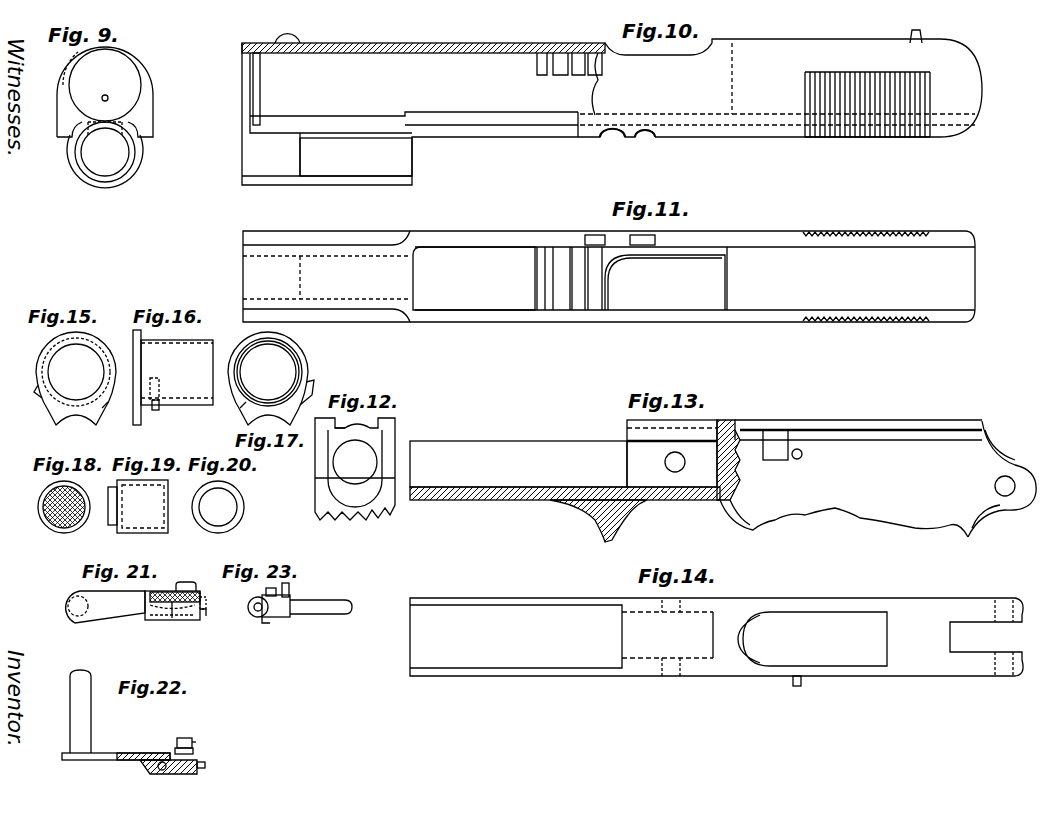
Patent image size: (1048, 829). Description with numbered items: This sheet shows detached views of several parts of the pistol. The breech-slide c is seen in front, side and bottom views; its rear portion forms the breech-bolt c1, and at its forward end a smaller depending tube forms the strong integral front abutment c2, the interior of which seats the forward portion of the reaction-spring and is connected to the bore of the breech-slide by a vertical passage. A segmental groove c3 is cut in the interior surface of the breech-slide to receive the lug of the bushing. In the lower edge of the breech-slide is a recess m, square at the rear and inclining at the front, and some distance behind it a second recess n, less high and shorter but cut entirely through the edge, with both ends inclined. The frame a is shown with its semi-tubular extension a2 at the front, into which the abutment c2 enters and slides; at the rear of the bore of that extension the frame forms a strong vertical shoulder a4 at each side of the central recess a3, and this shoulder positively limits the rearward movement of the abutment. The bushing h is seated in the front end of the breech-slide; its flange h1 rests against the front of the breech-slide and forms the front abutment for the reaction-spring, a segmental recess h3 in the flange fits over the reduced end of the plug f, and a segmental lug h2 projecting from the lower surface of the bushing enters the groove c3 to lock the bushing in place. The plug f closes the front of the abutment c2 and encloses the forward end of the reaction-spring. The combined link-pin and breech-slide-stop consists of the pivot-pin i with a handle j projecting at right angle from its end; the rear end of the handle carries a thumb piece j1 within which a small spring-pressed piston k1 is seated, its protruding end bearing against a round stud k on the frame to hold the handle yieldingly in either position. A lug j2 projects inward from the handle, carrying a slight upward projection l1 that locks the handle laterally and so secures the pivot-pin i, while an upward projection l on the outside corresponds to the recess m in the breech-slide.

In FIG. 9, the breech-slide c is at (111, 117).
In FIG. 10, the breech-slide c is at (612, 102).
In FIG. 11, the breech-slide c is at (609, 286).
In FIG. 9, the breech-bolt c1 is at (102, 85).
In FIG. 10, the breech-bolt c1 is at (855, 88).
In FIG. 11, the breech-bolt c1 is at (851, 278).
In FIG. 9, the front abutment c2 is at (105, 152).
In FIG. 10, the front abutment c2 is at (356, 157).
In FIG. 11, the front abutment c2 is at (326, 277).
In FIG. 9, the segmental groove c3 is at (102, 100).
In FIG. 10, the segmental groove c3 is at (260, 100).
In FIG. 10, the recess m is at (608, 141).
In FIG. 11, the recess m is at (595, 231).
In FIG. 10, the second recess n is at (645, 141).
In FIG. 11, the second recess n is at (642, 231).
In FIG. 15, the bushing h is at (76, 369).
In FIG. 16, the bushing h is at (177, 372).
In FIG. 17, the bushing h is at (268, 369).
In FIG. 15, the flange h1 is at (104, 410).
In FIG. 16, the flange h1 is at (133, 407).
In FIG. 17, the flange h1 is at (242, 408).
In FIG. 15, the segmental lug h2 is at (36, 386).
In FIG. 16, the segmental lug h2 is at (159, 408).
In FIG. 17, the segmental lug h2 is at (312, 382).
In FIG. 15, the segmental recess h3 is at (76, 403).
In FIG. 17, the segmental recess h3 is at (268, 403).
In FIG. 18, the plug f is at (64, 507).
In FIG. 19, the plug f is at (138, 506).
In FIG. 20, the plug f is at (218, 507).
In FIG. 12, the frame a is at (355, 469).
In FIG. 13, the frame a is at (723, 470).
In FIG. 14, the frame a is at (716, 633).
In FIG. 12, the semi-tubular extension a2 is at (355, 479).
In FIG. 13, the semi-tubular extension a2 is at (518, 464).
In FIG. 14, the semi-tubular extension a2 is at (516, 636).
In FIG. 12, the central recess a3 is at (355, 462).
In FIG. 13, the central recess a3 is at (672, 453).
In FIG. 14, the central recess a3 is at (667, 635).
In FIG. 12, the vertical shoulder a4 is at (335, 440).
In FIG. 13, the vertical shoulder a4 is at (626, 442).
In FIG. 14, the vertical shoulder a4 is at (620, 614).
In FIG. 13, the stud k is at (789, 447).
In FIG. 14, the stud k is at (804, 686).
In FIG. 21, the stud k is at (210, 600).
In FIG. 22, the stud k is at (160, 770).
In FIG. 21, the piston k1 is at (208, 620).
In FIG. 23, the piston k1 is at (258, 626).
In FIG. 22, the piston k1 is at (205, 766).
In FIG. 21, the handle j is at (105, 607).
In FIG. 22, the handle j is at (116, 767).
In FIG. 21, the thumb piece j1 is at (172, 613).
In FIG. 23, the thumb piece j1 is at (251, 607).
In FIG. 22, the thumb piece j1 is at (180, 775).
In FIG. 23, the lug j2 is at (282, 606).
In FIG. 22, the lug j2 is at (196, 744).
In FIG. 21, the upward projection l is at (200, 596).
In FIG. 23, the upward projection l is at (269, 582).
In FIG. 22, the upward projection l is at (175, 750).
In FIG. 21, the upward projection l1 is at (186, 578).
In FIG. 23, the upward projection l1 is at (290, 585).
In FIG. 22, the upward projection l1 is at (185, 738).
In FIG. 23, the pivot-pin i is at (321, 604).
In FIG. 22, the pivot-pin i is at (80, 711).